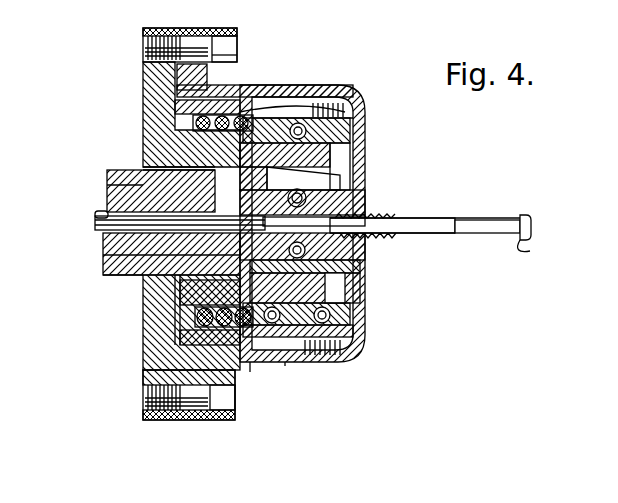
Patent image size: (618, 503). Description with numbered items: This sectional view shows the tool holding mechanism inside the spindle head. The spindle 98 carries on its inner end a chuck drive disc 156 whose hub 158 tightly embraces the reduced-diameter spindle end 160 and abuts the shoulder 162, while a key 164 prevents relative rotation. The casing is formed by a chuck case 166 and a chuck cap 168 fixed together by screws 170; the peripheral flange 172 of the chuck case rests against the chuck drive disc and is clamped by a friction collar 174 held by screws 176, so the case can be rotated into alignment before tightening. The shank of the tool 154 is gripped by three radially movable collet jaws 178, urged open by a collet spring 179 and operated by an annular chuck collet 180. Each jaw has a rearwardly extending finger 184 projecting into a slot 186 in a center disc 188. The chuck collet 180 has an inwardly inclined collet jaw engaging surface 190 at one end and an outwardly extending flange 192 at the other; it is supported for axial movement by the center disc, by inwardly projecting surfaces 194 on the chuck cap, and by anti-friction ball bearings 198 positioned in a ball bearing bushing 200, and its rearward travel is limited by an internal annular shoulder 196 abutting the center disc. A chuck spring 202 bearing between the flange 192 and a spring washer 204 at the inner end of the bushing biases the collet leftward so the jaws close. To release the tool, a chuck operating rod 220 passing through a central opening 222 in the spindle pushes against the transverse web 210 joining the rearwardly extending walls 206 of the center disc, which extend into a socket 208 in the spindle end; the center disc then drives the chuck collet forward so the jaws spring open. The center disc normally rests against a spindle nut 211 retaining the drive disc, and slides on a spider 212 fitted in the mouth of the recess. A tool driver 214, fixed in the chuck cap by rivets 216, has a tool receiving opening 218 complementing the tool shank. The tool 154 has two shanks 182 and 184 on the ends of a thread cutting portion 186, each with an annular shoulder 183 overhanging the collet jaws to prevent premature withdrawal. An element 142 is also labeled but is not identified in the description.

The spindle 98 is at (110, 168).
The rollers 142 is at (223, 123).
The tool 154 is at (484, 211).
The chuck drive disc 156 is at (143, 78).
The hub 158 is at (100, 214).
The spindle end 160 is at (195, 296).
The shoulder 162 is at (150, 162).
The key 164 is at (107, 190).
The chuck case 166 is at (246, 86).
The chuck cap 168 is at (365, 115).
The screws 170 is at (318, 100).
The peripheral flange 172 is at (178, 78).
The friction collar 174 is at (188, 29).
The screws 176 is at (232, 38).
The collet jaws 178 is at (375, 190).
The collet spring 179 is at (370, 277).
The chuck collet 180 is at (366, 146).
The shank 182 is at (380, 209).
The annular shoulder 183 is at (538, 248).
The shank 184 is at (468, 226).
The thread cutting portion 186 is at (437, 217).
The center disc 188 is at (258, 120).
The collet jaw engaging surface 190 is at (368, 184).
The flange 192 is at (200, 326).
The inwardly projecting surfaces 194 is at (366, 162).
The internal annular shoulder 196 is at (300, 112).
The anti-friction ball bearings 198 is at (330, 92).
The ball bearing bushing 200 is at (348, 90).
The chuck spring 202 is at (222, 420).
The spring washer 204 is at (250, 372).
The rearwardly extending walls 206 is at (103, 242).
The socket 208 is at (105, 270).
The transverse web 210 is at (105, 258).
The spindle nut 211 is at (288, 365).
The spider 212 is at (190, 283).
The tool driver 214 is at (366, 200).
The rivets 216 is at (368, 248).
The tool receiving opening 218 is at (367, 216).
The chuck operating rod 220 is at (95, 228).
The central opening 222 is at (100, 217).